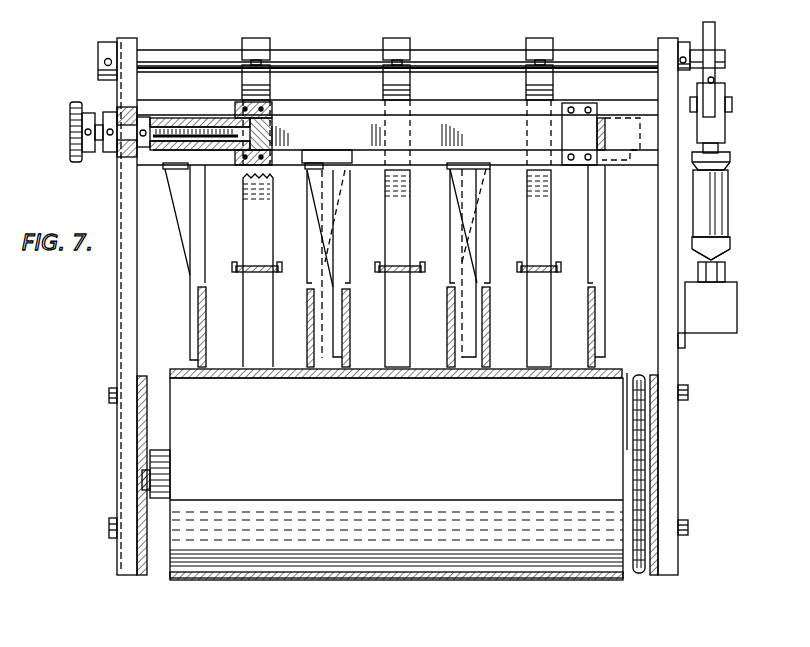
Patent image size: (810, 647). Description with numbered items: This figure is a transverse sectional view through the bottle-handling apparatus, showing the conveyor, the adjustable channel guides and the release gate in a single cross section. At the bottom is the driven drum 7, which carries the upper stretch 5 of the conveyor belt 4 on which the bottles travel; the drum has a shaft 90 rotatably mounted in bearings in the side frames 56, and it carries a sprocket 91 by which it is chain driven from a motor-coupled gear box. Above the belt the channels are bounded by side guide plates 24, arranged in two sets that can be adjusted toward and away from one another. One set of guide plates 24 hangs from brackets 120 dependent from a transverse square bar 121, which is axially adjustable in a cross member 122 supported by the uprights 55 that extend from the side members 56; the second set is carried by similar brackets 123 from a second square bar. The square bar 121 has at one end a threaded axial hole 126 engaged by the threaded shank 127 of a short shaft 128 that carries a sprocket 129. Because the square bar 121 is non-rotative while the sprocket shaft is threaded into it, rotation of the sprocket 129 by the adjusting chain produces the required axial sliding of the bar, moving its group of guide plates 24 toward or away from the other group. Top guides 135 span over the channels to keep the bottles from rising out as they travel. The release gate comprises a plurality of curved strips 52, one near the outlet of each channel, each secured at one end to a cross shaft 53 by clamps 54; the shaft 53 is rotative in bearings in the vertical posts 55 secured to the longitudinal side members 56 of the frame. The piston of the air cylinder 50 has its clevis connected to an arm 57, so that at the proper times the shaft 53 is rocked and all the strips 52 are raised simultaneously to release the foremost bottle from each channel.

The conveyor belt 4 is at (485, 580).
The upper stretch of the conveyor belt 5 is at (445, 378).
The driven drum 7 is at (567, 436).
The side guide plates 24 is at (207, 346).
The air cylinder 50 is at (726, 206).
The curved strips 52 is at (264, 235).
The cross shaft 53 is at (604, 57).
The clamps 54 is at (263, 42).
The uprights 55 is at (137, 45).
The side frames 56 is at (147, 428).
The arm 57 is at (718, 88).
The shaft 90 is at (146, 479).
The sprocket 91 is at (638, 375).
The brackets 120 is at (185, 238).
The transverse square bar 121 is at (345, 126).
The cross member 122 is at (481, 106).
The brackets 123 is at (308, 266).
The threaded axial hole 126 is at (224, 166).
The threaded shank 127 is at (190, 117).
The short shaft 128 is at (99, 152).
The sprocket 129 is at (74, 162).
The top guides 135 is at (240, 273).